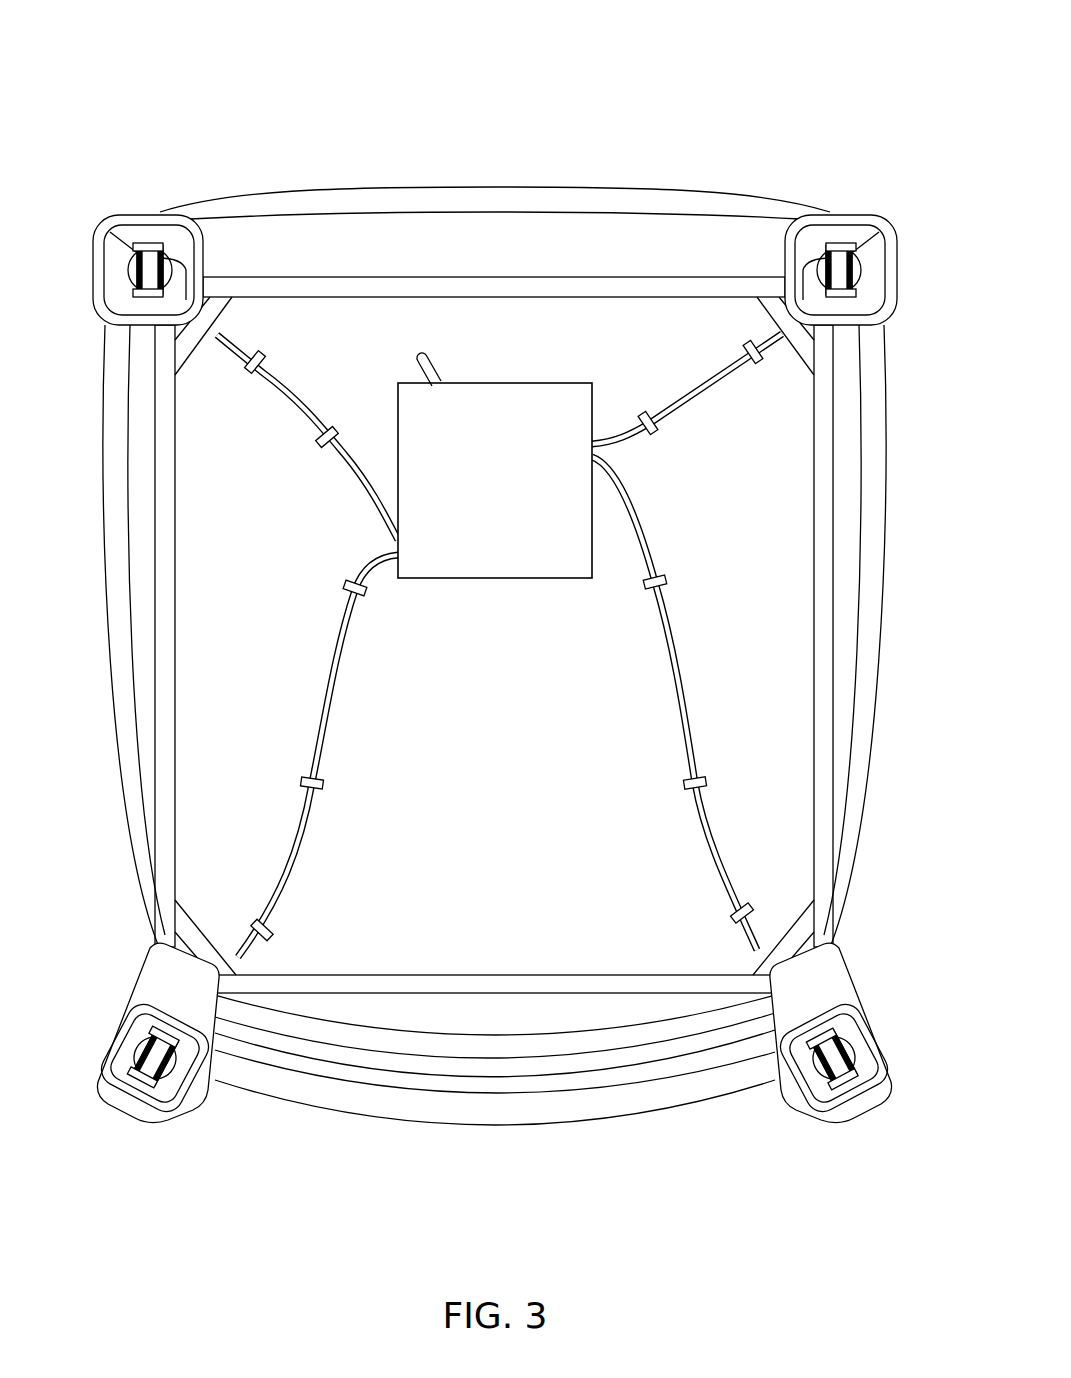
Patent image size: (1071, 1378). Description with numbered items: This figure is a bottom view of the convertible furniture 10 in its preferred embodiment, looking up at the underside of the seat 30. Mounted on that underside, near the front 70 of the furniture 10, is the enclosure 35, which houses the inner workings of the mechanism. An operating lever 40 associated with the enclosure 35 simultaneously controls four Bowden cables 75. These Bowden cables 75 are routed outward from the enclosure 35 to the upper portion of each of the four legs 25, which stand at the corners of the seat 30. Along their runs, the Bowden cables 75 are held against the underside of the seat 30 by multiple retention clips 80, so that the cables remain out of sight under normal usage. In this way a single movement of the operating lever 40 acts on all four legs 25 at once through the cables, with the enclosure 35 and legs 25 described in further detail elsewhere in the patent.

The convertible furniture 10 is at (122, 160).
The leg 25 is at (128, 243).
The seat 30 is at (491, 817).
The enclosure 35 is at (545, 425).
The operating lever 40 is at (428, 367).
The front 70 is at (430, 187).
The Bowden cable 75 is at (234, 337).
The retention clip 80 is at (257, 358).